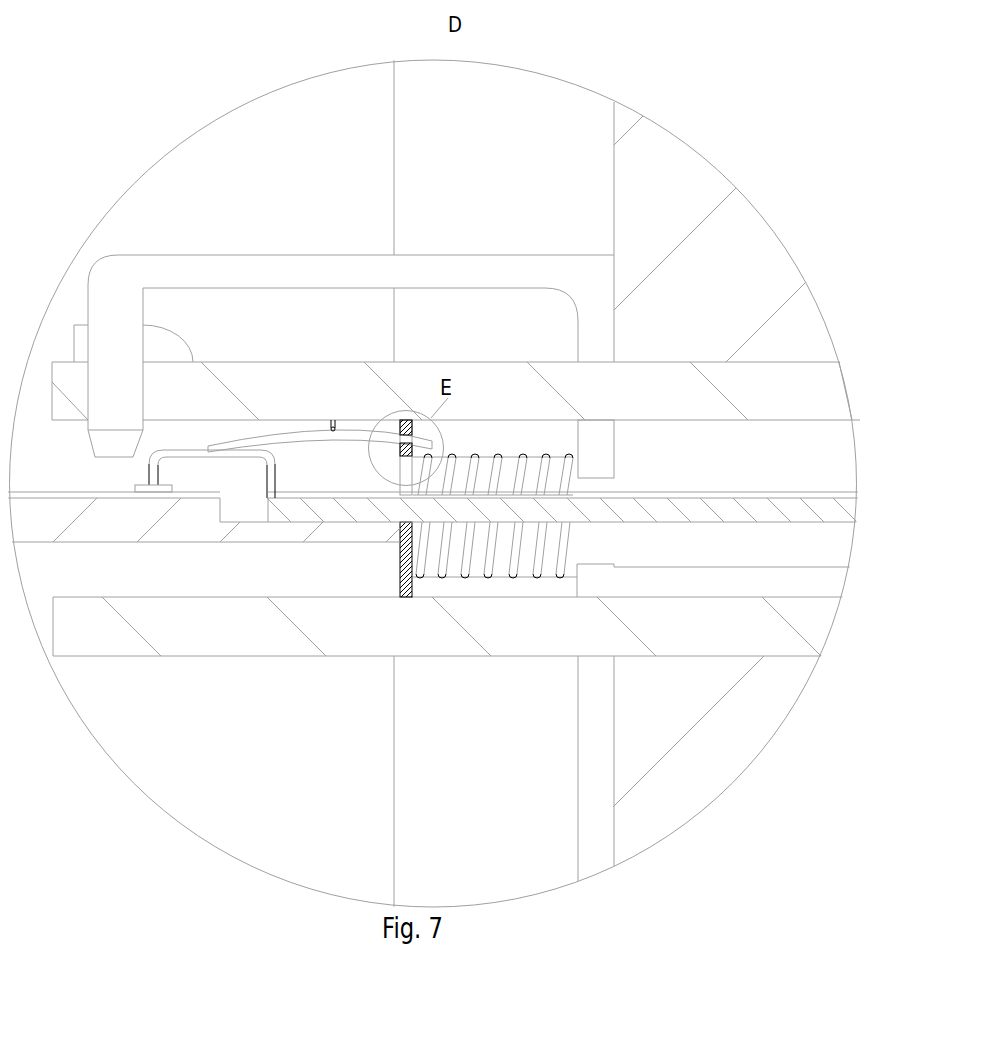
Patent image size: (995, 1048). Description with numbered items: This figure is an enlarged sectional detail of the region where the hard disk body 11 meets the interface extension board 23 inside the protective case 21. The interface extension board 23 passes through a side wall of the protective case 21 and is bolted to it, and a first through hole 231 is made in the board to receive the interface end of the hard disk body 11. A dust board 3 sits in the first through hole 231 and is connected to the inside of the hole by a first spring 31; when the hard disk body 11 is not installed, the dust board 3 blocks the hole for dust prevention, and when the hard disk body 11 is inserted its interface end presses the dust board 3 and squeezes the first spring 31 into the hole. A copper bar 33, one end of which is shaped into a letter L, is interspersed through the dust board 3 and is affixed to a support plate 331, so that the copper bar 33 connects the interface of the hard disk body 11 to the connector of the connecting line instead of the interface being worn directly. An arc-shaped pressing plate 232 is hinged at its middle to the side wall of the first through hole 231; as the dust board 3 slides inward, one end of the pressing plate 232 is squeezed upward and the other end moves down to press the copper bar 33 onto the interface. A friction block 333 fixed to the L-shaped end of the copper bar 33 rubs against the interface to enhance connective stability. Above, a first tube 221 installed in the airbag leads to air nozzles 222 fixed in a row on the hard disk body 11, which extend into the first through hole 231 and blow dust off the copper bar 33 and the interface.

The hard disk body 11 is at (98, 532).
The protective case 21 is at (588, 102).
The first tube 221 is at (237, 266).
The air nozzle 222 is at (97, 421).
The interface extension board 23 is at (288, 373).
The first through hole 231 is at (842, 468).
The arc-shaped pressing plate 232 is at (304, 437).
The dust board 3 is at (400, 563).
The first spring 31 is at (523, 458).
The copper bar 33 is at (328, 497).
The support plate 331 is at (717, 505).
The friction block 333 is at (178, 470).